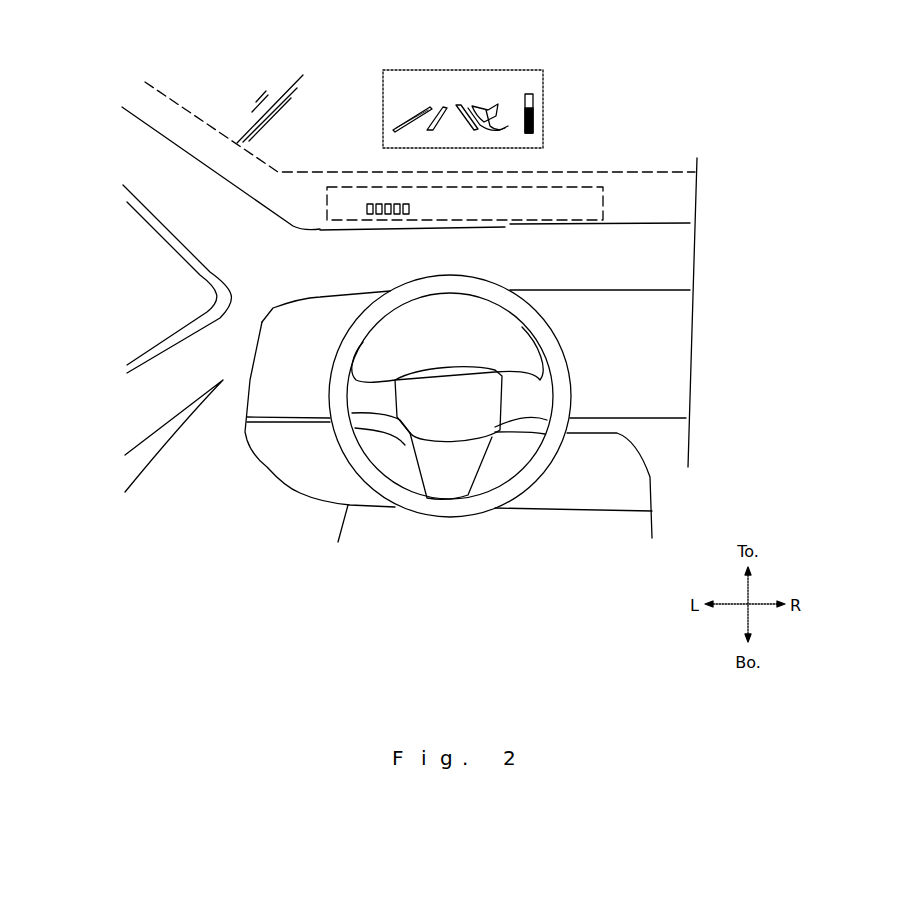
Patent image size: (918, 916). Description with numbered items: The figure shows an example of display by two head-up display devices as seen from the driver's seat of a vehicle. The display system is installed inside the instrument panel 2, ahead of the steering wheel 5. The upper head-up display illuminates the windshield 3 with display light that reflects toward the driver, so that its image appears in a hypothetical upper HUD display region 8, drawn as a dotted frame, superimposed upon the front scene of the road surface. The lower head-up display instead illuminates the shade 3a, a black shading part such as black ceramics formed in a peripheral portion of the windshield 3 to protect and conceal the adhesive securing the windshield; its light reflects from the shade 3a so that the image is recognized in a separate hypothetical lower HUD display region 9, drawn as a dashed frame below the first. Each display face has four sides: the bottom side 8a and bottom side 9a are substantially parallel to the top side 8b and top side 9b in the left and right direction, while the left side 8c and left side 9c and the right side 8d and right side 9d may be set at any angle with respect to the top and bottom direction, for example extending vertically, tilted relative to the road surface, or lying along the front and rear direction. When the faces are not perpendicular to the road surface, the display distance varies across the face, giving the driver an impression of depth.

The instrument panel 2 is at (672, 320).
The windshield 3 is at (668, 97).
The shade 3a is at (304, 182).
The steering wheel 5 is at (565, 358).
The upper HUD display region 8 is at (477, 98).
The bottom side 8a is at (515, 148).
The top side 8b is at (488, 70).
The left side 8c is at (385, 98).
The right side 8d is at (545, 130).
The lower HUD display region 9 is at (492, 211).
The bottom side 9a is at (507, 226).
The top side 9b is at (590, 185).
The left side 9c is at (320, 230).
The right side 9d is at (612, 228).